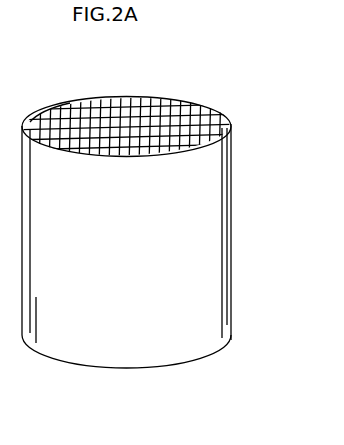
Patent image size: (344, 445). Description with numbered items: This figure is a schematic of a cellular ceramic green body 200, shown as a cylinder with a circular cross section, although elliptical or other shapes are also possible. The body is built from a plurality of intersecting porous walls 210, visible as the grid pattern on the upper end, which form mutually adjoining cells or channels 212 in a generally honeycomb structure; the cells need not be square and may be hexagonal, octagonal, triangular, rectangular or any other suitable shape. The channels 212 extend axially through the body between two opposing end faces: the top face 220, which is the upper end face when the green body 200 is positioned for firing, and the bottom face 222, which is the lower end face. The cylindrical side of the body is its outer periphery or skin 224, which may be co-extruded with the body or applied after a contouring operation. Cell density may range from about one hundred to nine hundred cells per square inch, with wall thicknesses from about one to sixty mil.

The cellular ceramic green body 200 is at (99, 84).
The intersecting porous walls 210 is at (151, 102).
The cells or channels 212 is at (213, 112).
The top face 220 is at (232, 120).
The skin 224 is at (215, 193).
The bottom face 222 is at (120, 370).